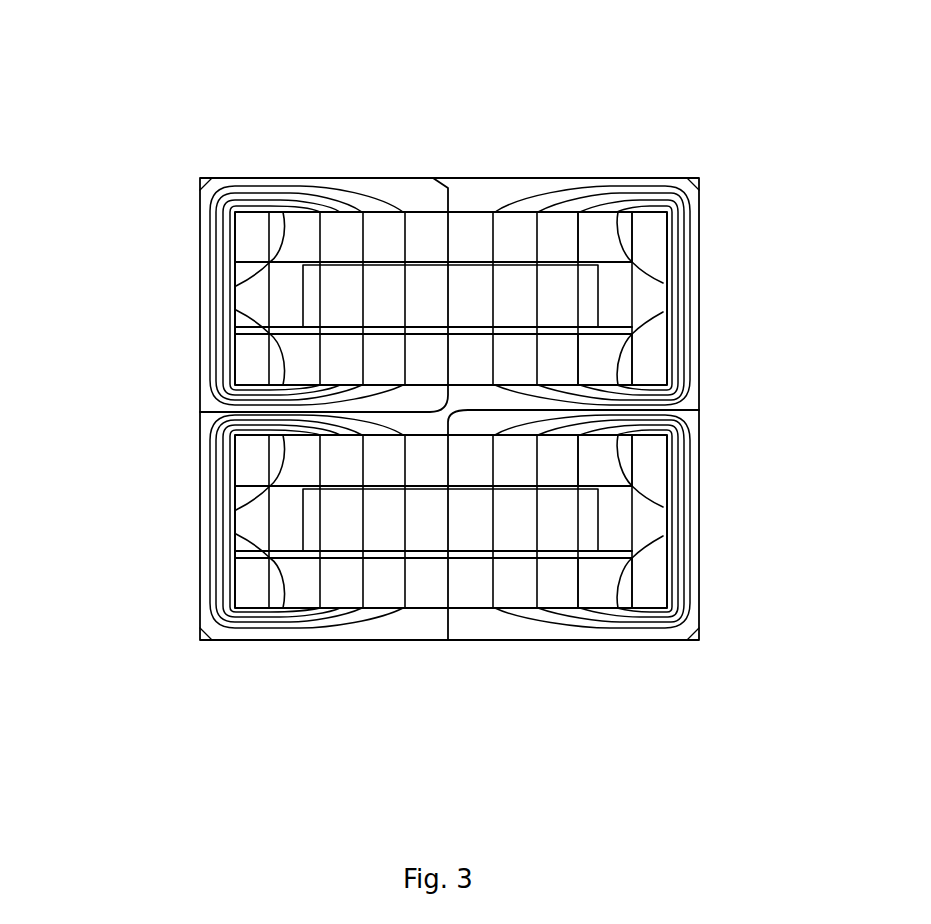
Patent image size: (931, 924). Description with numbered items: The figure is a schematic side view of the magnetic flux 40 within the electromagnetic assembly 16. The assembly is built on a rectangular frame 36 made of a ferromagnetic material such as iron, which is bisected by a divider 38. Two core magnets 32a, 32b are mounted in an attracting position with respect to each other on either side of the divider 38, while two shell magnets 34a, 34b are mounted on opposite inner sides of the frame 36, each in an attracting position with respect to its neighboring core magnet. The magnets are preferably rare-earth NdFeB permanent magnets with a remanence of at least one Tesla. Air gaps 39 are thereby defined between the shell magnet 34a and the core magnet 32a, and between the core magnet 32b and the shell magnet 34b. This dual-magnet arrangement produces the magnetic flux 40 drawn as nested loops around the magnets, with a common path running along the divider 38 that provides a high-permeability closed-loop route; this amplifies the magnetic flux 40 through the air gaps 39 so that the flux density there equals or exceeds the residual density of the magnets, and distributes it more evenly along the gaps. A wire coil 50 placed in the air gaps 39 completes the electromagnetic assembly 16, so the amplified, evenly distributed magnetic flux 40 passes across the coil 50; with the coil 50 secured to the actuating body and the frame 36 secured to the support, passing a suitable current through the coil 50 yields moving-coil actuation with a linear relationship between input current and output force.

The electromagnetic assembly 16 is at (523, 118).
The rectangular frame 36 is at (412, 192).
The divider 38 is at (472, 423).
The magnetic flux 40 is at (675, 290).
The wire coil 50 is at (337, 528).
The air gaps 39 is at (255, 527).
The shell magnet 34a is at (598, 242).
The core magnet 32a is at (607, 362).
The core magnet 32b is at (600, 467).
The shell magnet 34b is at (605, 585).